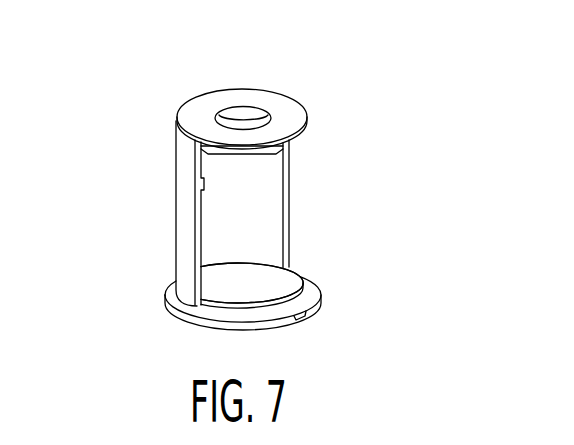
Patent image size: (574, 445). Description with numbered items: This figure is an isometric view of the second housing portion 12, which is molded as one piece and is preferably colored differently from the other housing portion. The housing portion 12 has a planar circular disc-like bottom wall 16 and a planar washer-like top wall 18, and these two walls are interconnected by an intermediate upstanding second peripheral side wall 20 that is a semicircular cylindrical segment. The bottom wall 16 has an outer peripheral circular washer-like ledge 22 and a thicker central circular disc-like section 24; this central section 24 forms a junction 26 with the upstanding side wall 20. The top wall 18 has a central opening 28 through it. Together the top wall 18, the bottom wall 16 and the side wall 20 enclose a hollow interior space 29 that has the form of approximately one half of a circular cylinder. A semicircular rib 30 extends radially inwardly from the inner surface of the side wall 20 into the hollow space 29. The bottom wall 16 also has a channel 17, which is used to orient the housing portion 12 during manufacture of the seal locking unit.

The second housing portion 12 is at (266, 202).
The bottom wall 16 is at (313, 280).
The channel 17 is at (298, 318).
The top wall 18 is at (293, 108).
The second peripheral side wall 20 is at (291, 192).
The ledge 22 is at (302, 275).
The central circular disc-like section 24 is at (258, 298).
The junction 26 is at (230, 260).
The central opening 28 is at (245, 118).
The hollow interior space 29 is at (210, 205).
The semicircular rib 30 is at (203, 180).